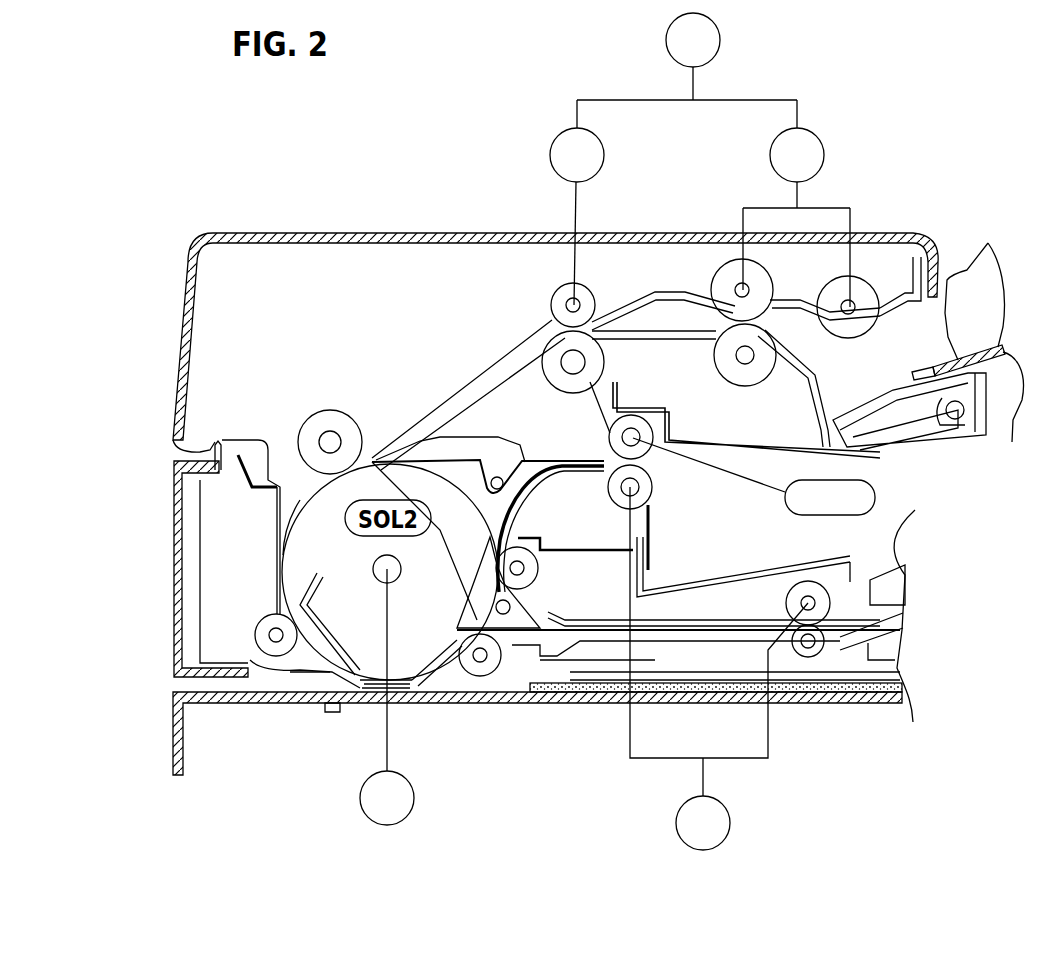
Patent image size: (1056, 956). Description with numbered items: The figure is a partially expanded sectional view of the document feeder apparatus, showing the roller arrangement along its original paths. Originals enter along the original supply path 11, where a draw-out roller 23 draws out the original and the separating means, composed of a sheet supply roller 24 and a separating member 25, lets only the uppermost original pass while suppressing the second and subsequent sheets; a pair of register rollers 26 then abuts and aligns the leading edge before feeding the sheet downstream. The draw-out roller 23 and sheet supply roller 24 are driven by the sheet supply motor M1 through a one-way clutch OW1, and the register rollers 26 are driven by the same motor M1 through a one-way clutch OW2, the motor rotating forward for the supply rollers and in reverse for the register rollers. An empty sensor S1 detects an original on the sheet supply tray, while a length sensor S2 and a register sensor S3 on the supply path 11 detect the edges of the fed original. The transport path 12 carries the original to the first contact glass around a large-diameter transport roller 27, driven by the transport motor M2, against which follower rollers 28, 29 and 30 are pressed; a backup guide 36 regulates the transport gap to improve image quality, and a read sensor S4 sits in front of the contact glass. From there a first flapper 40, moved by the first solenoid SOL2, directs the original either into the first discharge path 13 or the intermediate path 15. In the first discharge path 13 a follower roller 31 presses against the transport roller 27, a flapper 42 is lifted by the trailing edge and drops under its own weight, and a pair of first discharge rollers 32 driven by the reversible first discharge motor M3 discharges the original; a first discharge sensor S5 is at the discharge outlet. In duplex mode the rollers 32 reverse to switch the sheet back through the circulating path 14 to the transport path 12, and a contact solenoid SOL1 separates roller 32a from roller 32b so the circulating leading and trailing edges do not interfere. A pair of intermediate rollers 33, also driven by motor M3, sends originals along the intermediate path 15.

The original supply path 11 is at (480, 382).
The transport path 12 is at (330, 672).
The first discharge path 13 is at (522, 488).
The circulating path 14 is at (423, 456).
The intermediate path 15 is at (724, 690).
The draw-out roller 23 is at (850, 292).
The sheet supply roller 24 is at (727, 273).
The separating member 25 is at (728, 370).
The register rollers 26 is at (558, 297).
The transport roller 27 is at (313, 498).
The follower roller 28 is at (342, 422).
The follower roller 29 is at (262, 642).
The follower roller 30 is at (482, 677).
The follower roller 31 is at (530, 570).
The first discharge rollers 32 is at (735, 497).
The roller 32a is at (650, 452).
The roller 32b is at (648, 494).
The intermediate rollers 33 is at (828, 594).
The backup guide 36 is at (413, 690).
The first flapper 40 is at (472, 625).
The flapper 42 is at (508, 470).
The sheet supply motor M1 is at (687, 70).
The transport motor M2 is at (387, 690).
The first discharge motor M3 is at (703, 804).
The one-way clutch OW1 is at (796, 217).
The one-way clutch OW2 is at (577, 216).
The contact solenoid SOL1 is at (754, 476).
The first solenoid SOL2 is at (388, 518).
The empty sensor S1 is at (903, 280).
The length sensor S2 is at (665, 280).
The register sensor S3 is at (612, 282).
The read sensor S4 is at (267, 585).
The first discharge sensor S5 is at (592, 440).